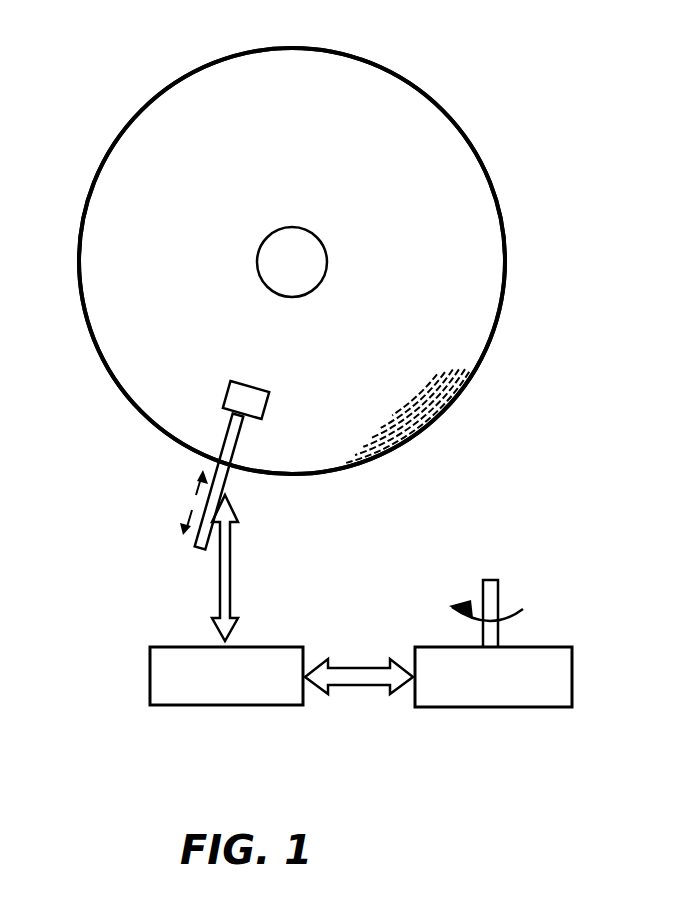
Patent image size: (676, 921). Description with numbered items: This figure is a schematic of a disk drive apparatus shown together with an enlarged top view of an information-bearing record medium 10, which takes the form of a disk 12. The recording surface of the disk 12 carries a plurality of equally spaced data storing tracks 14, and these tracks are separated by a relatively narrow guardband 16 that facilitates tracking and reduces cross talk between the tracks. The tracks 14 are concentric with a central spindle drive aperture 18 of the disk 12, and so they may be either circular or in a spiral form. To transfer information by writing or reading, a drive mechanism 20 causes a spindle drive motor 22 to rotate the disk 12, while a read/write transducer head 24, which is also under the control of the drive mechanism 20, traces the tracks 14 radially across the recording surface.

The information-bearing record medium 10 is at (480, 120).
The disk 12 is at (475, 208).
The data storing tracks 14 is at (445, 400).
The guardband 16 is at (420, 413).
The central spindle drive aperture 18 is at (277, 252).
The drive mechanism 20 is at (148, 688).
The spindle drive motor 22 is at (572, 675).
The read/write transducer head 24 is at (260, 408).